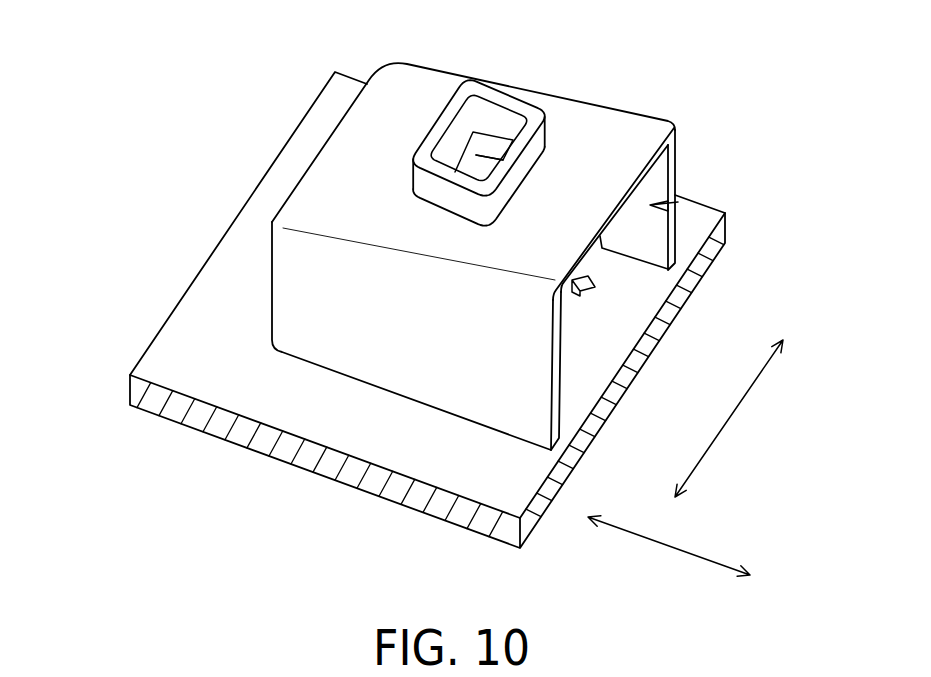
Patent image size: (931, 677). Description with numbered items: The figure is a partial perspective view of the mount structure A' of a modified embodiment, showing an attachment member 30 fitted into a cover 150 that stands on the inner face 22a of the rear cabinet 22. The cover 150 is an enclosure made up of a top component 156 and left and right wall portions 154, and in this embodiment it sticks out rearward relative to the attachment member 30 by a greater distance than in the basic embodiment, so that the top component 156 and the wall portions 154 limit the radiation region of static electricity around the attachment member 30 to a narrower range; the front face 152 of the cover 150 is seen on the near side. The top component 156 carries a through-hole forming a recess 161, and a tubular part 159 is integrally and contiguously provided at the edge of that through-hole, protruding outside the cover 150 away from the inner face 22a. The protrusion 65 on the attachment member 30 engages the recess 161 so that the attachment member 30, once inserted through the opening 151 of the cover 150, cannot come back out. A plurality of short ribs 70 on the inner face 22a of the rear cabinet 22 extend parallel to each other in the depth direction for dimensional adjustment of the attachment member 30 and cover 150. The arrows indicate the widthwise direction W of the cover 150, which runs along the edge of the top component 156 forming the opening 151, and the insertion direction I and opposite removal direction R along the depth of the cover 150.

The rear cabinet 22 is at (383, 326).
The inner face of the rear cabinet 22a is at (160, 362).
The cover 150 is at (478, 229).
The front wall of cover 152 is at (270, 322).
The left and right wall portions 154 is at (677, 162).
The top component 156 is at (415, 78).
The tubular part 159 is at (490, 128).
The recess 161 is at (484, 126).
The protrusion 65 is at (478, 170).
The opening 151 is at (678, 202).
The attachment member 30 is at (611, 266).
The ribs 70 is at (581, 296).
The mount structure A' is at (720, 67).
The widthwise direction W is at (723, 428).
The insertion direction I is at (627, 535).
The removal direction R is at (702, 558).